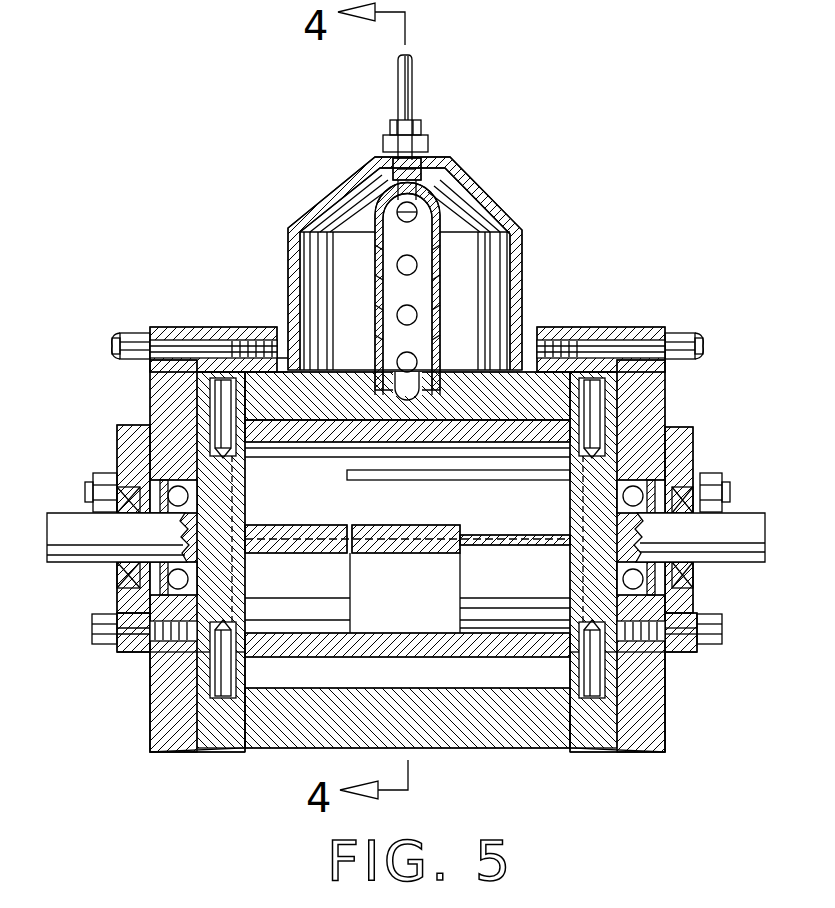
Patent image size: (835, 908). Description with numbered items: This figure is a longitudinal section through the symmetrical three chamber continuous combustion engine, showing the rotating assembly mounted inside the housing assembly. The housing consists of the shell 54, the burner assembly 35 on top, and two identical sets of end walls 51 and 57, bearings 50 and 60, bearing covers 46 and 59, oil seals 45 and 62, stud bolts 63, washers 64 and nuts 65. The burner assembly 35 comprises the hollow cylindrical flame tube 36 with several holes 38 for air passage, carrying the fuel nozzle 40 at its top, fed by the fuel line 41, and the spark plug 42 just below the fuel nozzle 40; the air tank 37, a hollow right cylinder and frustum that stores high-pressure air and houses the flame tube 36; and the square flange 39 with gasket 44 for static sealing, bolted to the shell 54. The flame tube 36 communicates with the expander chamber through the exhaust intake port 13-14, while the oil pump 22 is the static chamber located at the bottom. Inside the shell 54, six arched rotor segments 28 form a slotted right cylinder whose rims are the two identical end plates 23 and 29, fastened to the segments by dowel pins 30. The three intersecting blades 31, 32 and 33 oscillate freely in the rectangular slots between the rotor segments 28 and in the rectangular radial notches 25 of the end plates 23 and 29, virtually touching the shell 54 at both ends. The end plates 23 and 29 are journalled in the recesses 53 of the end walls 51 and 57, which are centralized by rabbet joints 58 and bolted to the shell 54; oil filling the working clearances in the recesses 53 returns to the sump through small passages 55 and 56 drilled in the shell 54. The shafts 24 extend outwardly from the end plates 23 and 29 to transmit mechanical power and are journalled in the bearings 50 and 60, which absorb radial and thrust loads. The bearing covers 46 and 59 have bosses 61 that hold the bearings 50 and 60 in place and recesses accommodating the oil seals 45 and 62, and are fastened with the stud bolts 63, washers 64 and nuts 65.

The exhaust intake port 13-14 is at (450, 375).
The oil pump 22 is at (476, 682).
The end plate 23 is at (710, 566).
The shaft 24 is at (70, 522).
The rectangular radial notch 25 is at (577, 545).
The arched segment 28 is at (488, 453).
The end plate 29 is at (245, 491).
The dowel pin 30 is at (220, 420).
The blade 31 is at (553, 530).
The blade 32 is at (340, 504).
The blade 33 is at (357, 600).
The burner assembly 35 is at (330, 182).
The flame tube 36 is at (377, 270).
The air tank 37 is at (465, 254).
The holes 38 is at (413, 268).
The square flange 39 is at (283, 358).
The fuel nozzle 40 is at (412, 150).
The fuel line 41 is at (410, 92).
The spark plug 42 is at (420, 212).
The gasket 44 is at (640, 374).
The oil seal 45 is at (680, 520).
The bearing cover 46 is at (690, 652).
The bearing 50 is at (633, 506).
The end wall 51 is at (667, 742).
The recess 53 is at (200, 660).
The shell 54 is at (425, 750).
The small passage 55 is at (545, 750).
The small passage 56 is at (245, 697).
The end wall 57 is at (150, 391).
The rabbet joint 58 is at (245, 747).
The bearing cover 59 is at (130, 652).
The bearing 60 is at (178, 506).
The boss 61 is at (165, 595).
The oil seal 62 is at (125, 515).
The stud bolt 63 is at (113, 347).
The washer 64 is at (150, 327).
The nut 65 is at (133, 330).